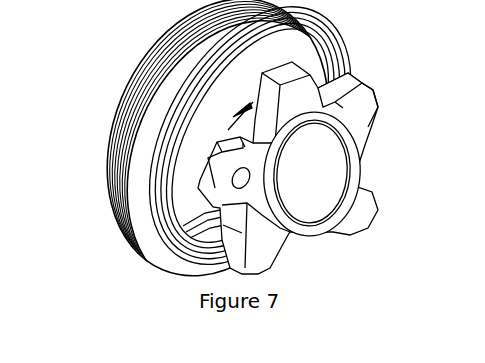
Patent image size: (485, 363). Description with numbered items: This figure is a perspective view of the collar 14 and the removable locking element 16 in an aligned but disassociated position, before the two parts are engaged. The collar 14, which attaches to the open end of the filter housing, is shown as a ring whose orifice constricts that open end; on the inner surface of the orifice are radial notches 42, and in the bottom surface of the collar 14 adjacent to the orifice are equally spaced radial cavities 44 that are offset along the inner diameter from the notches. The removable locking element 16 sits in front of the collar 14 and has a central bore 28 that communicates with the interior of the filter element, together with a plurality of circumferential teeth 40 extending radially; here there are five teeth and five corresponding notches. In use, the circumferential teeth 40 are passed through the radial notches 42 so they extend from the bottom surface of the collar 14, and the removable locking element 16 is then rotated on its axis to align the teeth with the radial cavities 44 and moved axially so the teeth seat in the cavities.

The collar 14 is at (140, 147).
The removable locking element 16 is at (330, 223).
The central bore 28 is at (345, 163).
The circumferential teeth 40 is at (367, 97).
The radial notches 42 is at (355, 62).
The radial cavities 44 is at (190, 215).